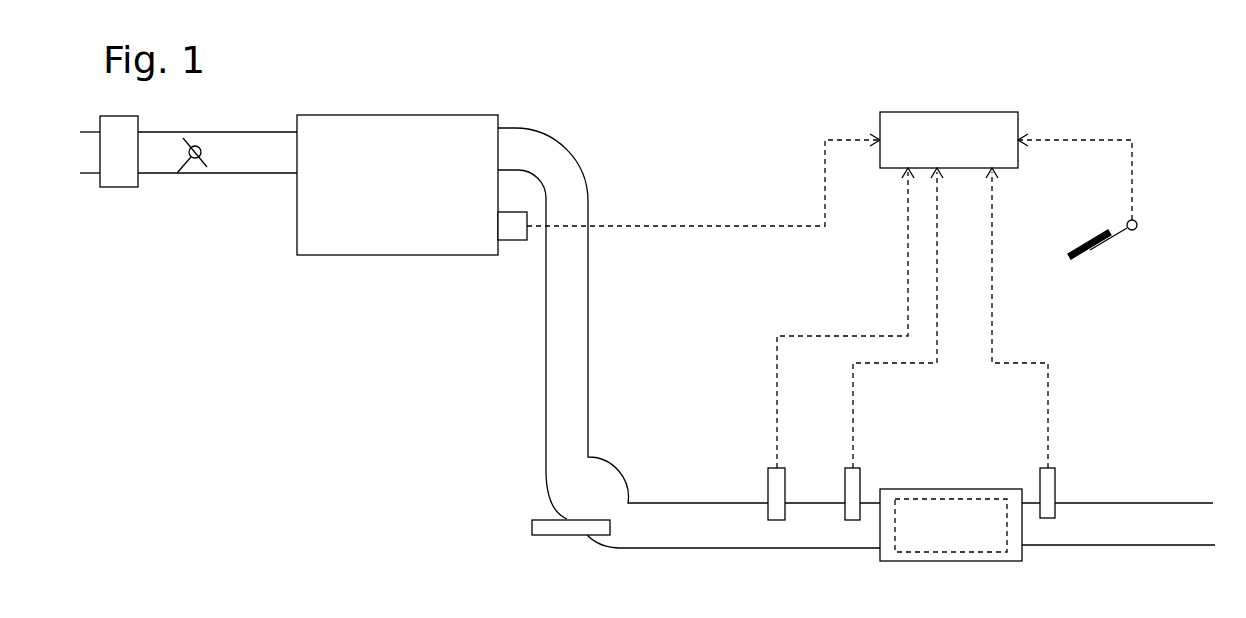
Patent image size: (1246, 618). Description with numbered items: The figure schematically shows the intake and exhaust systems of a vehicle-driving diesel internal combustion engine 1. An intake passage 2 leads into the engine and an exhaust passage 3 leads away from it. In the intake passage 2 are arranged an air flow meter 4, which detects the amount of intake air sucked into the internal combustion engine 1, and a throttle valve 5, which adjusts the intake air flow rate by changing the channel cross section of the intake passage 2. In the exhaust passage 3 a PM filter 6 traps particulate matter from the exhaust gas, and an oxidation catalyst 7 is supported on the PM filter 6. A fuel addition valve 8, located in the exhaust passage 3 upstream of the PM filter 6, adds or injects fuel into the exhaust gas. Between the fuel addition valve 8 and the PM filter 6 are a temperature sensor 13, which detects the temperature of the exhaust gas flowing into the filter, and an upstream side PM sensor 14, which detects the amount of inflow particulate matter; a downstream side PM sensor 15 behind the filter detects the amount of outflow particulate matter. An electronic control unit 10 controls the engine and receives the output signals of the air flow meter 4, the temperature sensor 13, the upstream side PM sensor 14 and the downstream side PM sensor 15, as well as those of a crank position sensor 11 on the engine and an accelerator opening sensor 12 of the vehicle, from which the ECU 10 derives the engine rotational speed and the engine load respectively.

The internal combustion engine 1 is at (410, 257).
The intake passage 2 is at (253, 173).
The exhaust passage 3 is at (588, 312).
The air flow meter 4 is at (118, 190).
The throttle valve 5 is at (176, 176).
The PM filter 6 is at (938, 489).
The oxidation catalyst 7 is at (968, 554).
The fuel addition valve 8 is at (567, 537).
The electronic control unit (ECU) 10 is at (958, 112).
The crank position sensor 11 is at (512, 243).
The accelerator opening sensor 12 is at (1133, 232).
The temperature sensor 13 is at (768, 482).
The upstream side PM sensor 14 is at (845, 482).
The downstream side PM sensor 15 is at (1055, 478).